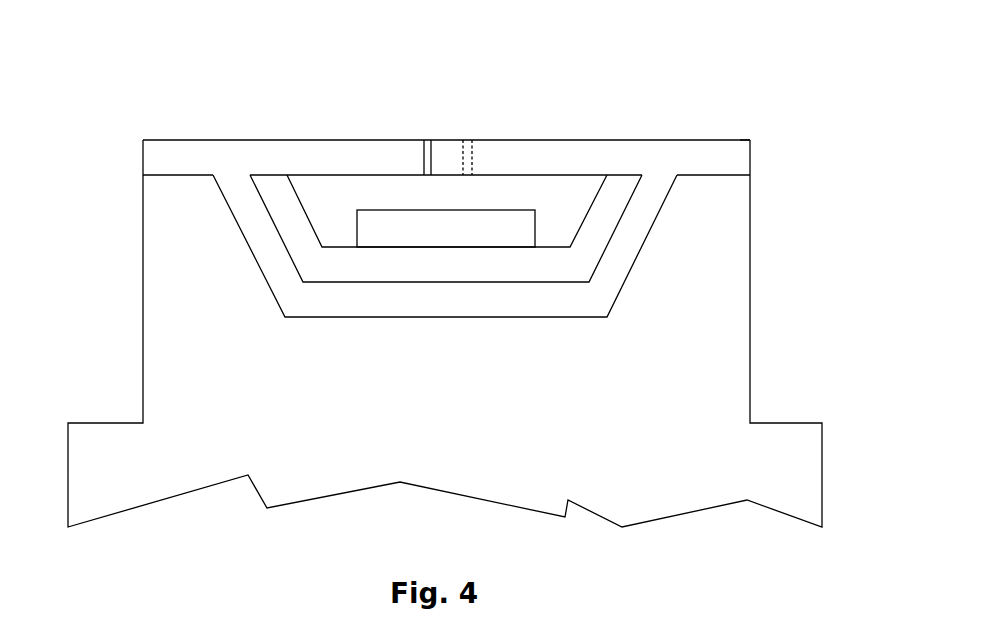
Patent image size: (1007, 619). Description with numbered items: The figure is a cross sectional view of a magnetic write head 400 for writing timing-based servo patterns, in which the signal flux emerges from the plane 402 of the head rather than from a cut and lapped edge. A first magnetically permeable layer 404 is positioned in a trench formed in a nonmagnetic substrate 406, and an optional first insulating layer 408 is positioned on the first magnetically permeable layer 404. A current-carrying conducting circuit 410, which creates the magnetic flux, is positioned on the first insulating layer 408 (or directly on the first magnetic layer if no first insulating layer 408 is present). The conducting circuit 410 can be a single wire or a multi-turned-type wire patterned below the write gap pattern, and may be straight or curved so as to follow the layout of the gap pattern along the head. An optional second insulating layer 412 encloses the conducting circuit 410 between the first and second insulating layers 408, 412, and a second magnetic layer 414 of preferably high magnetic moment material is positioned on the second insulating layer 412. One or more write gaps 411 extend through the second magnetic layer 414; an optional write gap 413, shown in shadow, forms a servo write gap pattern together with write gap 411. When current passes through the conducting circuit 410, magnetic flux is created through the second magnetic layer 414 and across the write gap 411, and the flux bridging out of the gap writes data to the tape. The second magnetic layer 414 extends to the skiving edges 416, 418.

The magnetic write head 400 is at (116, 109).
The plane of the head 402 is at (550, 140).
The first magnetically permeable layer 404 is at (248, 247).
The nonmagnetic substrate 406 is at (142, 368).
The first insulating layer 408 is at (600, 250).
The conducting circuit 410 is at (397, 210).
The write gap 411 is at (430, 140).
The second insulating layer 412 is at (598, 192).
The optional write gap 413 is at (470, 140).
The second magnetic layer 414 is at (752, 158).
The skiving edge 416 is at (143, 140).
The skiving edge 418 is at (752, 139).